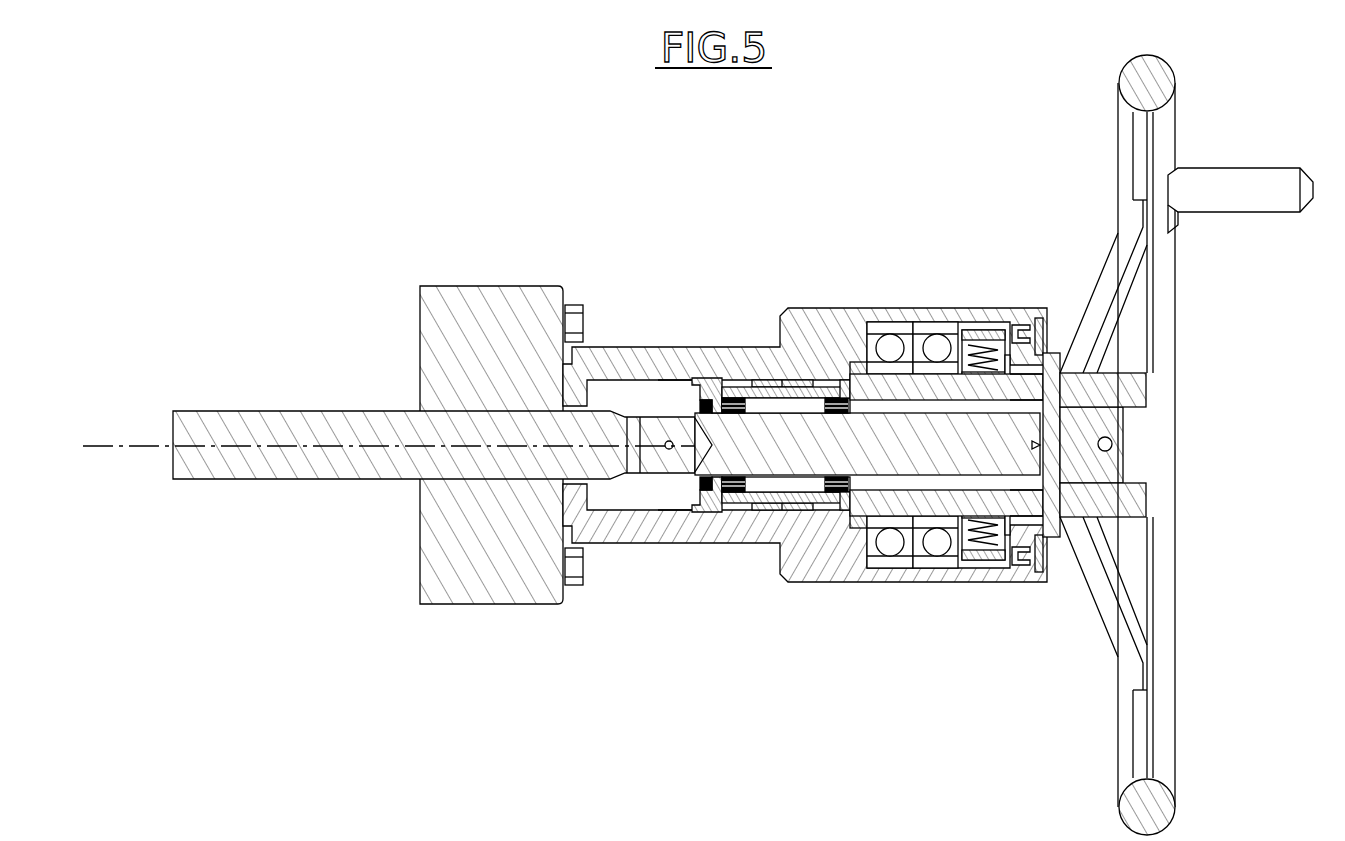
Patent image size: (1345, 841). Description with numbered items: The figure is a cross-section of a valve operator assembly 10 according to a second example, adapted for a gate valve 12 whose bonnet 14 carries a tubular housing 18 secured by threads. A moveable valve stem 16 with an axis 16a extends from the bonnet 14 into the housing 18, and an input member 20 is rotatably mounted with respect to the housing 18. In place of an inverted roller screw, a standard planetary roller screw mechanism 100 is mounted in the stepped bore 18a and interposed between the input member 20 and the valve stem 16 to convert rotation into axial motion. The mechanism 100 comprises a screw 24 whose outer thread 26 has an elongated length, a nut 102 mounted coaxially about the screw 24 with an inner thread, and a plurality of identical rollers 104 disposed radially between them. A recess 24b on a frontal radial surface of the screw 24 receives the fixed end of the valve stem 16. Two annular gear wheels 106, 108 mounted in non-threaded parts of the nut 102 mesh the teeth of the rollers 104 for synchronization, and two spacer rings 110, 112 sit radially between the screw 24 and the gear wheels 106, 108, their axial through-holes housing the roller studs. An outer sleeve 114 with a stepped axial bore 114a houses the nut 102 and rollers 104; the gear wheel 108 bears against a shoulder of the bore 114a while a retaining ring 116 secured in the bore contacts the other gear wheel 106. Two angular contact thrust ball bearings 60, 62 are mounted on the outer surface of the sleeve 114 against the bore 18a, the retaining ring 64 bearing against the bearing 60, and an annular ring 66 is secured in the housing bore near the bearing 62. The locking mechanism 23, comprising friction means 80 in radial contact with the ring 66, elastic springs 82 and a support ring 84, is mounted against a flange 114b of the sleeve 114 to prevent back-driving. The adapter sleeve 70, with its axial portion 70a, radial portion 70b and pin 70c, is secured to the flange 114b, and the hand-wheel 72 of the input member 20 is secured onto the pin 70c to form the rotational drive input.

The valve operator assembly 10 is at (802, 272).
The gate valve 12 is at (511, 262).
The bonnet 14 is at (470, 286).
The valve stem 16 is at (236, 417).
The axis 16a is at (93, 447).
The housing 18 is at (820, 305).
The bore 18a is at (692, 378).
The input member 20 is at (1237, 118).
The locking mechanism 23 is at (1007, 540).
The screw 24 is at (764, 460).
The recess 24b is at (684, 470).
The outer thread 26 is at (1095, 400).
The rolling bearing 60 is at (910, 320).
The rolling bearing 62 is at (945, 320).
The retaining ring 64 is at (850, 358).
The annular ring 66 is at (990, 328).
The adapter sleeve 70 is at (1050, 548).
The axial portion 70a is at (1022, 322).
The radial portion 70b is at (1044, 348).
The pin 70c is at (1112, 428).
The hand-wheel 72 is at (1176, 740).
The friction means 80 is at (980, 550).
The elastic springs 82 is at (965, 560).
The support ring 84 is at (985, 520).
The planetary roller screw mechanism 100 is at (808, 490).
The nut 102 is at (752, 505).
The rollers 104 is at (840, 495).
The gear wheel 106 is at (765, 382).
The gear wheel 108 is at (856, 345).
The spacer ring 110 is at (735, 380).
The spacer ring 112 is at (872, 345).
The outer sleeve 114 is at (1026, 386).
The axial bore 114a is at (1016, 492).
The flange 114b is at (1032, 518).
The retaining ring 116 is at (710, 515).